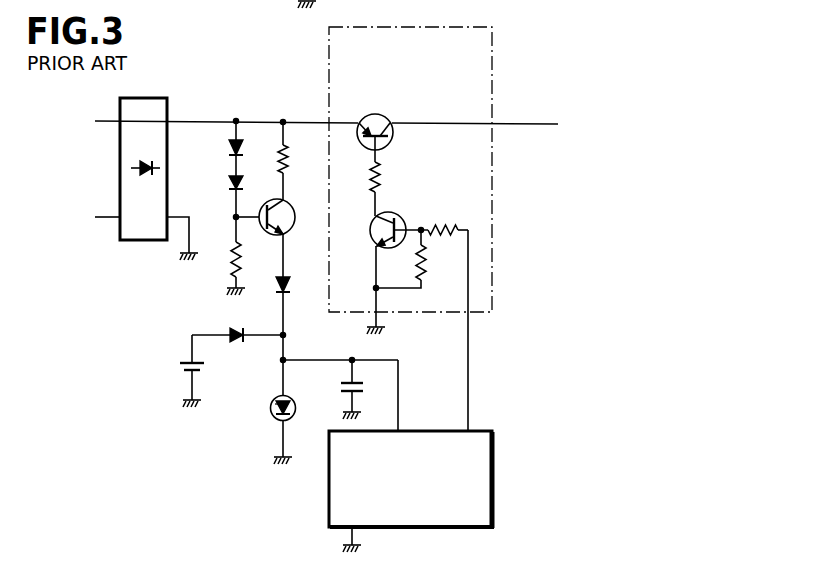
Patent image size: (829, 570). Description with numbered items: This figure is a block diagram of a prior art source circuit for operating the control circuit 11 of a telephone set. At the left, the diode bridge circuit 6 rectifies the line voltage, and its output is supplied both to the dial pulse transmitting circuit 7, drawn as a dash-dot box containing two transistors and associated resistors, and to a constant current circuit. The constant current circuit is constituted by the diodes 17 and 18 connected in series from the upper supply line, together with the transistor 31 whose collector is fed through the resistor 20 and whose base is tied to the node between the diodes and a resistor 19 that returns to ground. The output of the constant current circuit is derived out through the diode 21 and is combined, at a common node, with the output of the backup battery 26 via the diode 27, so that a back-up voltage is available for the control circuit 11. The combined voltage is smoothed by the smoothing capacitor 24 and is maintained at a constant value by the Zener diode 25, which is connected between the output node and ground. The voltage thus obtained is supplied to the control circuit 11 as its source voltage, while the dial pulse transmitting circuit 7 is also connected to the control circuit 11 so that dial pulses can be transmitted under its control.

The diode bridge circuit 6 is at (157, 98).
The dial pulse transmitting circuit 7 is at (519, 72).
The control circuit 11 is at (497, 498).
The diode 17 is at (228, 150).
The diode 18 is at (228, 184).
The resistor 19 is at (226, 261).
The resistor 20 is at (288, 162).
The diode 21 is at (292, 287).
The smoothing capacitor 24 is at (345, 387).
The Zener diode 25 is at (271, 418).
The backup battery 26 is at (180, 368).
The diode 27 is at (237, 345).
The transistor 31 is at (293, 225).